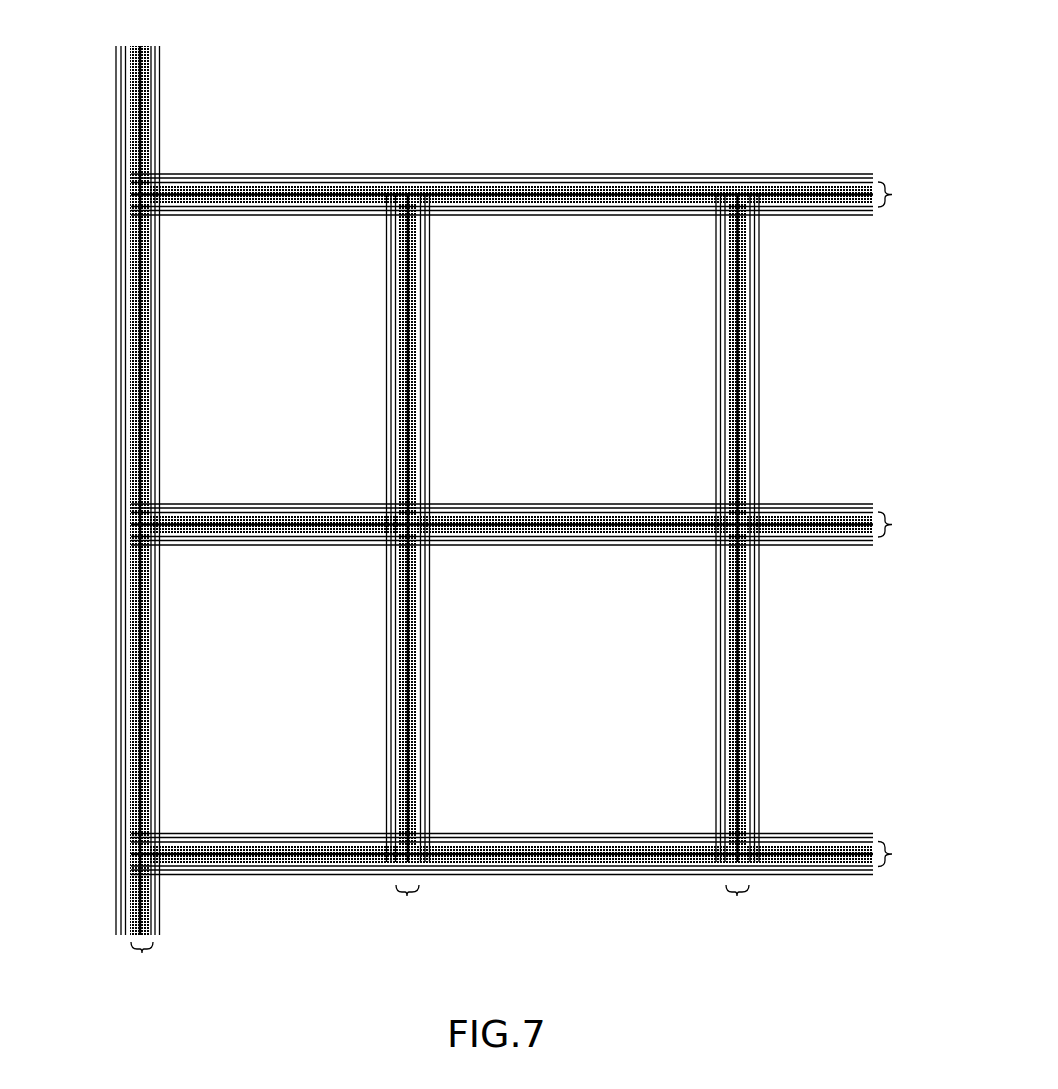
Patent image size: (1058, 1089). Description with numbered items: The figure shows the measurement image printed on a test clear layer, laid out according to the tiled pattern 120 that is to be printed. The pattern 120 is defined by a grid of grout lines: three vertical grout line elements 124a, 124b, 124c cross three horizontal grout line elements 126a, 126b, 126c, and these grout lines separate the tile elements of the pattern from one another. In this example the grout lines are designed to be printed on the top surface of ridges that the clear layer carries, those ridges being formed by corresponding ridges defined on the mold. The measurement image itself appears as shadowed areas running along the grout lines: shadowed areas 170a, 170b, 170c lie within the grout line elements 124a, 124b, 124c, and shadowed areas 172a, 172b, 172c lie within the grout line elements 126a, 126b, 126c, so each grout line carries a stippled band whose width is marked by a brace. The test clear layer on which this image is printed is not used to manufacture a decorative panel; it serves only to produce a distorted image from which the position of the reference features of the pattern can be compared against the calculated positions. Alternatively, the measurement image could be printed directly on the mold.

The pattern 120 is at (502, 503).
The vertical grout line element 124a is at (500, 183).
The vertical grout line element 124b is at (268, 516).
The vertical grout line element 124c is at (512, 845).
The horizontal grout line element 126a is at (133, 470).
The horizontal grout line element 126b is at (398, 728).
The horizontal grout line element 126c is at (733, 469).
The shadowed area 170a is at (141, 965).
The shadowed area 170b is at (405, 905).
The shadowed area 170c is at (734, 905).
The shadowed area 172a is at (919, 197).
The shadowed area 172b is at (919, 527).
The shadowed area 172c is at (918, 857).